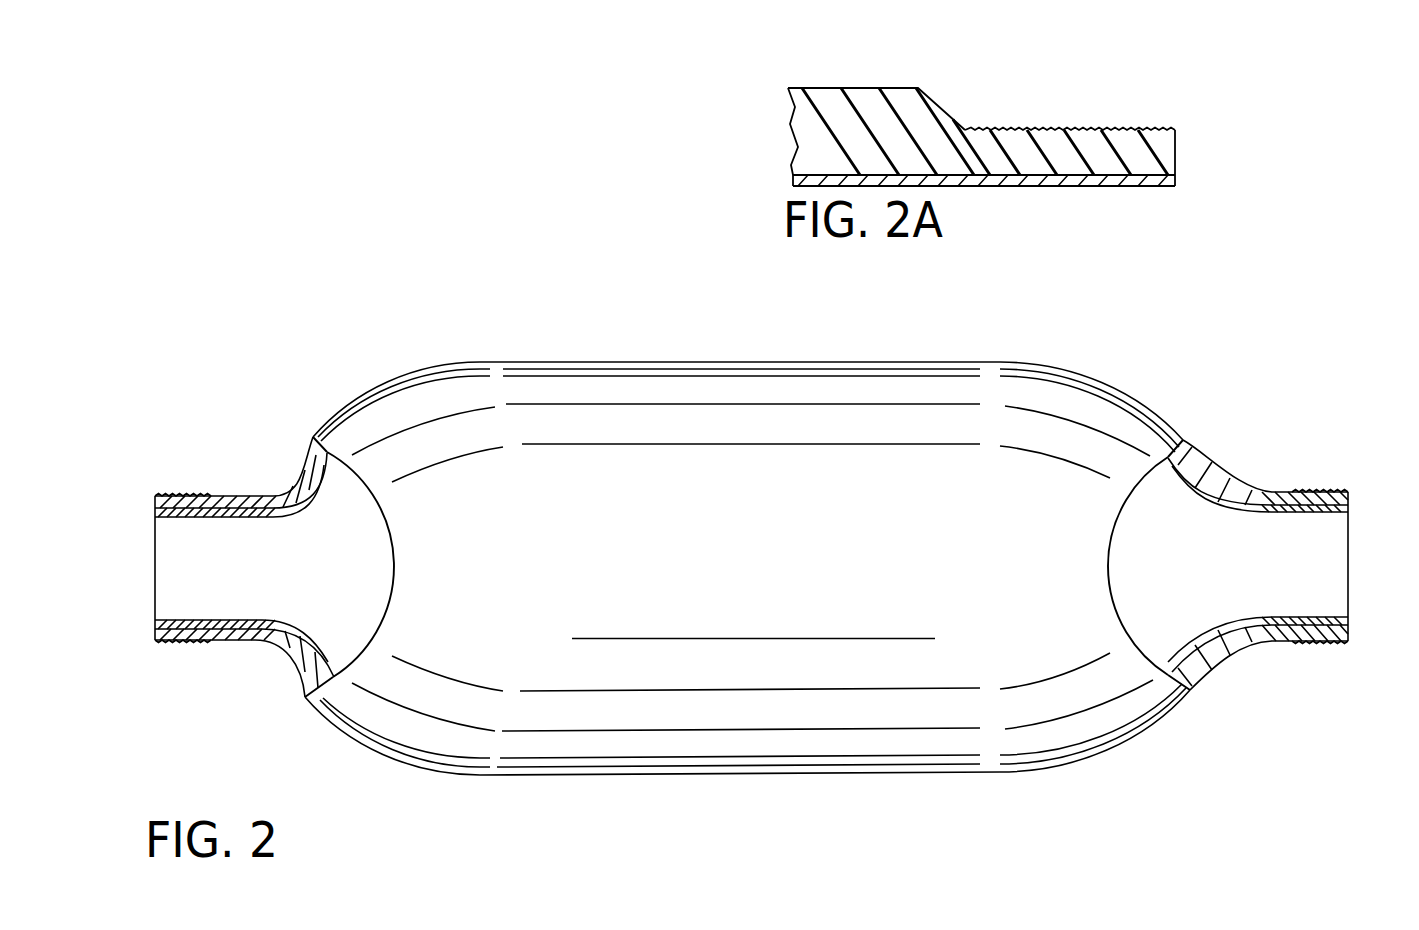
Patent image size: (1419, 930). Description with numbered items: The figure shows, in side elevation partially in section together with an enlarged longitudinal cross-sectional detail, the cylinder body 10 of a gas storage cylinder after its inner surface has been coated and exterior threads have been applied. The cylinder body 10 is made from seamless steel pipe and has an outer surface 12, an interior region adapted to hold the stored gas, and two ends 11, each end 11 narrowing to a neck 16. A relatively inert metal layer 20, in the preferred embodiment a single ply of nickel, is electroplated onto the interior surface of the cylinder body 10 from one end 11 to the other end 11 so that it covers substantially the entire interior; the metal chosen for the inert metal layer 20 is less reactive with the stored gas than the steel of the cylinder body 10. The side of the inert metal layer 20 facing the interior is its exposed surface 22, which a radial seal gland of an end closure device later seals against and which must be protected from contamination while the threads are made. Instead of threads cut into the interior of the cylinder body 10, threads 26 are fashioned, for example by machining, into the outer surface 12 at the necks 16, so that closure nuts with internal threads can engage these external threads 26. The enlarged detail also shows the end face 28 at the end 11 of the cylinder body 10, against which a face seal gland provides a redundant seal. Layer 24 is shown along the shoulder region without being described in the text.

In FIG. 2, the cylinder body 10 is at (560, 343).
In FIG. 2, the end 11 is at (176, 490).
In FIG. 2A, the end 11 is at (1130, 113).
In FIG. 2, the outer surface 12 is at (868, 377).
In FIG. 2, the neck 16 is at (250, 645).
In FIG. 2A, the neck 16 is at (848, 88).
In FIG. 2, the inert metal layer 20 is at (1350, 507).
In FIG. 2A, the inert metal layer 20 is at (1177, 180).
In FIG. 2, the exposed surface 22 is at (1290, 514).
In FIG. 2A, the exposed surface 22 is at (1117, 188).
In FIG. 2, the shoulder transition 24 is at (1255, 502).
In FIG. 2, the threads 26 is at (183, 643).
In FIG. 2A, the threads 26 is at (1053, 127).
In FIG. 2A, the end face 28 is at (1177, 153).